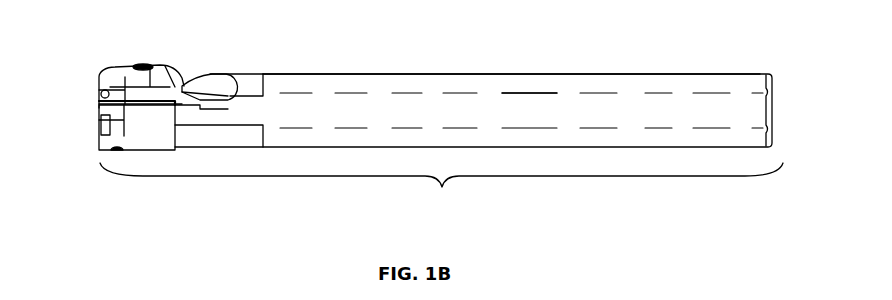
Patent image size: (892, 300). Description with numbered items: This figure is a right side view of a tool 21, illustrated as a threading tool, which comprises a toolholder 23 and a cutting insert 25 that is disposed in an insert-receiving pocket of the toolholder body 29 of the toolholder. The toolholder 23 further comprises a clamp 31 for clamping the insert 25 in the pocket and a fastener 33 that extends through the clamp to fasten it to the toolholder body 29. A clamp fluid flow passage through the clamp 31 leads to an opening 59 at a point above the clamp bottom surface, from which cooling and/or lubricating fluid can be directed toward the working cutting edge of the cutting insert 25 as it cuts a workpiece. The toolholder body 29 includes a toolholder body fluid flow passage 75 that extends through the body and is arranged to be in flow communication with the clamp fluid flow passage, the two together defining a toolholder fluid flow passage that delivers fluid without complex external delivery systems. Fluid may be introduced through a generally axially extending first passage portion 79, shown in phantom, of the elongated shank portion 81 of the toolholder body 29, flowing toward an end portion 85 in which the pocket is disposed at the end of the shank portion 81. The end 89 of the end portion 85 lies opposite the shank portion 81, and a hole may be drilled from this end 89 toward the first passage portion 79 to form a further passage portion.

The tool 21 is at (441, 191).
The toolholder 23 is at (378, 56).
The toolholder body 29 is at (472, 68).
The toolholder body fluid flow passage 75 is at (510, 95).
The first passage portion 79 is at (541, 121).
The shank portion 81 is at (628, 73).
The clamp 31 is at (174, 56).
The fastener 33 is at (138, 65).
The opening 59 is at (101, 92).
The cutting insert 25 is at (93, 119).
The end 89 is at (93, 140).
The end portion 85 is at (147, 132).